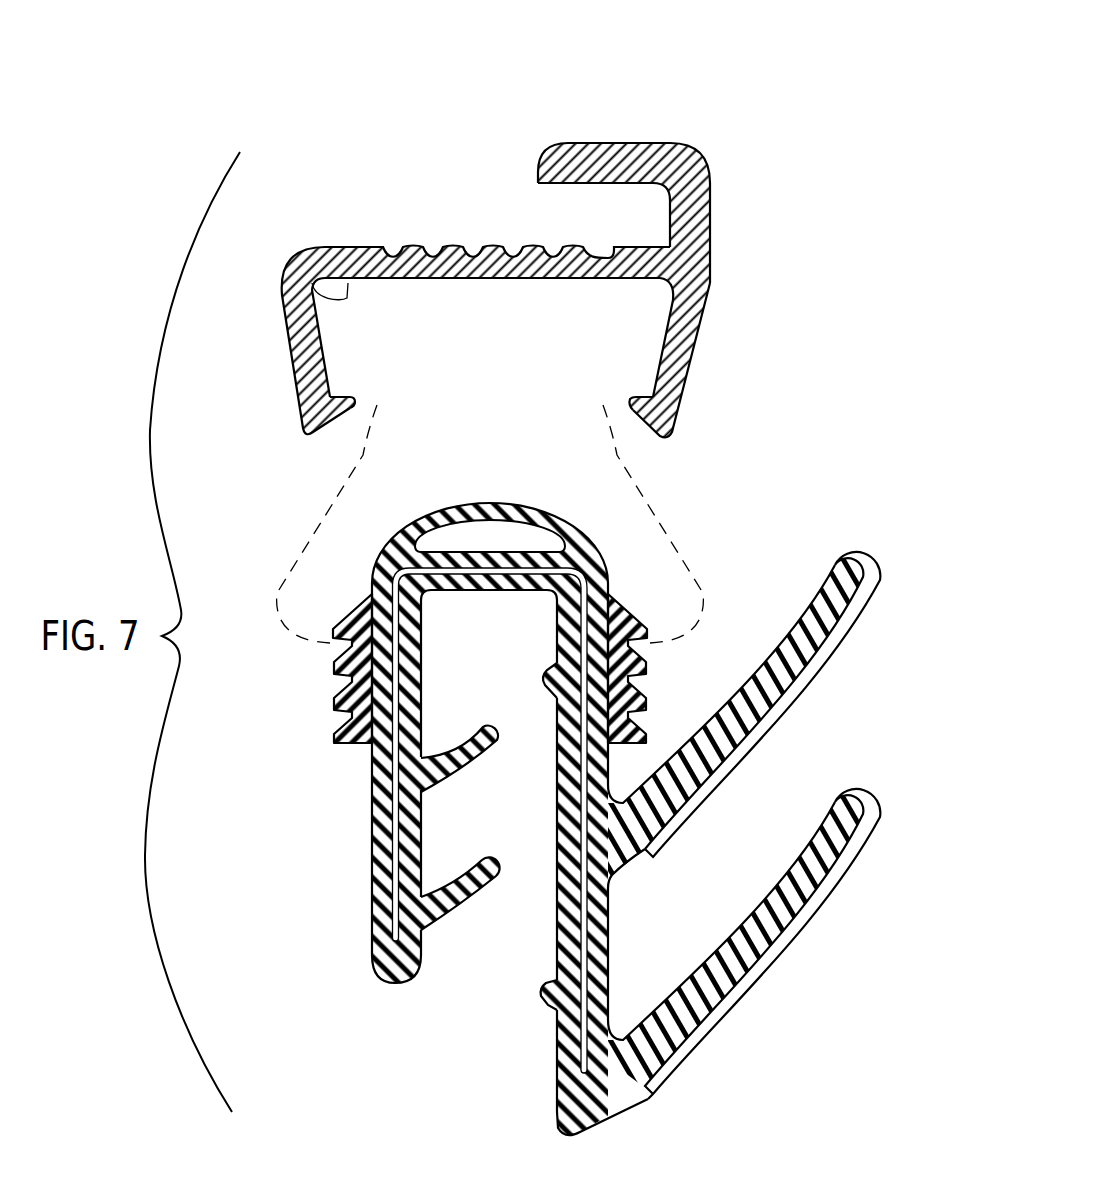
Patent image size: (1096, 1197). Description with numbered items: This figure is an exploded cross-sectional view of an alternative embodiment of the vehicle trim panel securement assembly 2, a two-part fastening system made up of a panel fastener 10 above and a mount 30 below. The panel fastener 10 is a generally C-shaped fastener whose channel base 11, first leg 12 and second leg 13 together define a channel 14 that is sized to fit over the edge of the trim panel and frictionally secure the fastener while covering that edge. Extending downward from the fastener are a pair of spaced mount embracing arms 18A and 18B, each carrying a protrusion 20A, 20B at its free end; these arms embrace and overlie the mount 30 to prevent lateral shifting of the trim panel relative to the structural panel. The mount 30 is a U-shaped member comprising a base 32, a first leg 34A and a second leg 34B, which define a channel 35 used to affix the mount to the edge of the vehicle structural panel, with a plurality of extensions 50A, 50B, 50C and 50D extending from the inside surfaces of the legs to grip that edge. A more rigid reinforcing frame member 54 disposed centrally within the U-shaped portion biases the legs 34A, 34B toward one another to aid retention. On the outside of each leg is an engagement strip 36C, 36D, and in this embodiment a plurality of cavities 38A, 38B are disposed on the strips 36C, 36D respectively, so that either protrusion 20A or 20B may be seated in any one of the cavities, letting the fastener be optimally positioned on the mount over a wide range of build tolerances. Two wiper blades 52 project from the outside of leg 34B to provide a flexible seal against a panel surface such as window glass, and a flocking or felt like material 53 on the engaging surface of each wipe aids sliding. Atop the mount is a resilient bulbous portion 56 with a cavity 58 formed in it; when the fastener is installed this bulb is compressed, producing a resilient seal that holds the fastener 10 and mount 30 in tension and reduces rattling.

The vehicle trim panel securement assembly 2 is at (752, 66).
The panel fastener 10 is at (728, 182).
The channel base 11 is at (712, 208).
The first leg 12 is at (575, 143).
The second leg 13 is at (302, 297).
The channel 14 is at (655, 197).
The mount embracing arm 18A is at (275, 369).
The mount embracing arm 18B is at (714, 343).
The protrusion 20A is at (342, 397).
The protrusion 20B is at (640, 397).
The mount 30 is at (358, 855).
The base 32 is at (478, 592).
The first leg 34A is at (372, 790).
The second leg 34B is at (615, 873).
The channel 35 is at (448, 868).
The engagement strip 36C is at (309, 628).
The engagement strip 36D is at (658, 629).
The cavities 38A is at (330, 724).
The cavities 38B is at (647, 720).
The extension 50A is at (489, 858).
The extension 50B is at (497, 724).
The extension 50C is at (542, 673).
The extension 50D is at (543, 990).
The wiper blades 52 is at (751, 825).
The felt like material 53 is at (853, 657).
The reinforcing frame member 54 is at (372, 930).
The resilient bulbous portion 56 is at (490, 492).
The cavity 58 is at (512, 532).